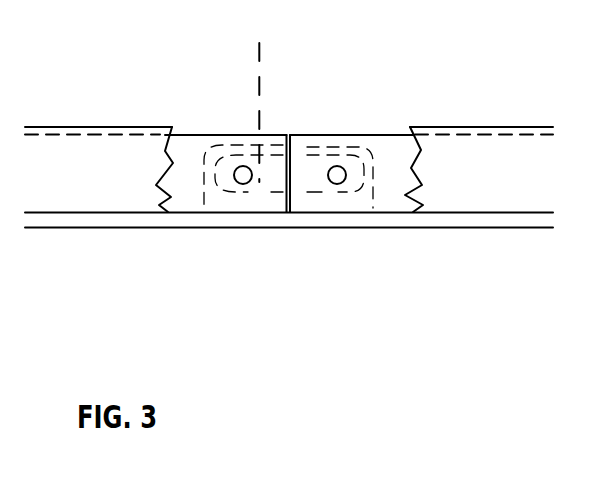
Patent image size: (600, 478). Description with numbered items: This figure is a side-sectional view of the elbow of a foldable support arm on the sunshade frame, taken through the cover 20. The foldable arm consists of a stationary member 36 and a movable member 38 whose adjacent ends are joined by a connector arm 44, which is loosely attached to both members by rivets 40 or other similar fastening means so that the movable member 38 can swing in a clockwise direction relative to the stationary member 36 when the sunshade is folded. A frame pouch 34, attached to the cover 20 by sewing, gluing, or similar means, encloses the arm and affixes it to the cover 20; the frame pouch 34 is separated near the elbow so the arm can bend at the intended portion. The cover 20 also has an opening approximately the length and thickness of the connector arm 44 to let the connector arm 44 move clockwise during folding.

The cover 20 is at (83, 223).
The frame pouch 34 is at (73, 126).
The stationary member 36 is at (186, 195).
The movable member 38 is at (392, 185).
The rivets 40 is at (243, 175).
The connector arm 44 is at (248, 94).